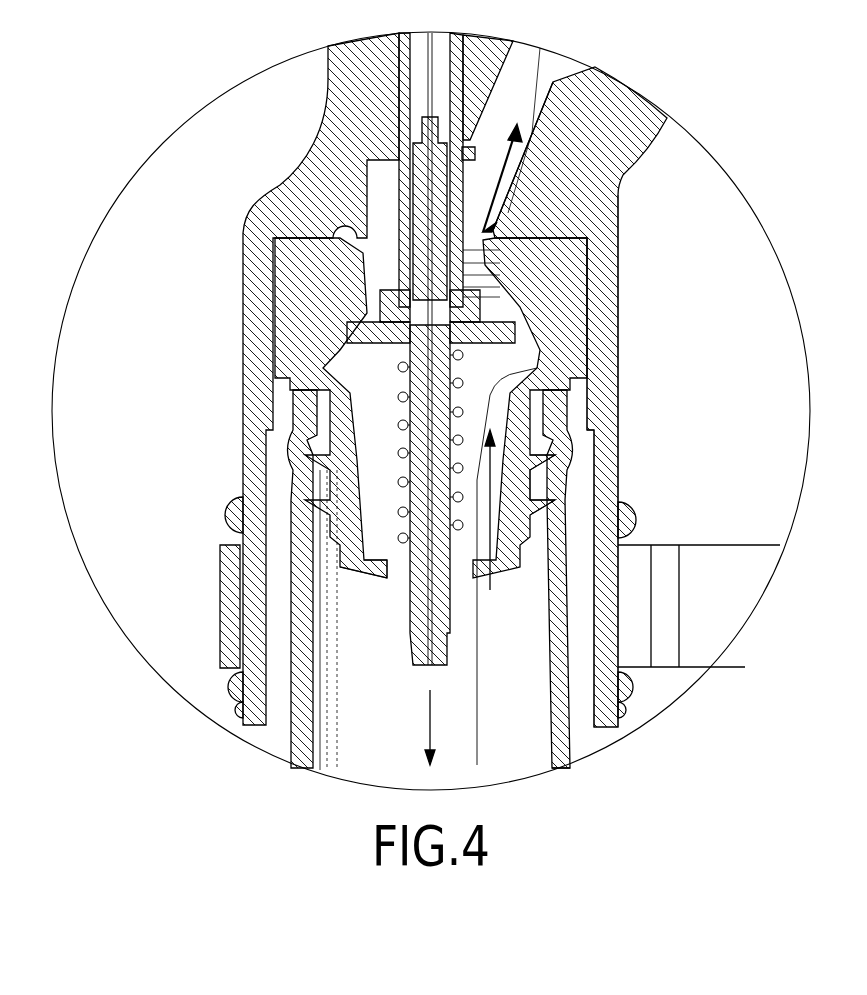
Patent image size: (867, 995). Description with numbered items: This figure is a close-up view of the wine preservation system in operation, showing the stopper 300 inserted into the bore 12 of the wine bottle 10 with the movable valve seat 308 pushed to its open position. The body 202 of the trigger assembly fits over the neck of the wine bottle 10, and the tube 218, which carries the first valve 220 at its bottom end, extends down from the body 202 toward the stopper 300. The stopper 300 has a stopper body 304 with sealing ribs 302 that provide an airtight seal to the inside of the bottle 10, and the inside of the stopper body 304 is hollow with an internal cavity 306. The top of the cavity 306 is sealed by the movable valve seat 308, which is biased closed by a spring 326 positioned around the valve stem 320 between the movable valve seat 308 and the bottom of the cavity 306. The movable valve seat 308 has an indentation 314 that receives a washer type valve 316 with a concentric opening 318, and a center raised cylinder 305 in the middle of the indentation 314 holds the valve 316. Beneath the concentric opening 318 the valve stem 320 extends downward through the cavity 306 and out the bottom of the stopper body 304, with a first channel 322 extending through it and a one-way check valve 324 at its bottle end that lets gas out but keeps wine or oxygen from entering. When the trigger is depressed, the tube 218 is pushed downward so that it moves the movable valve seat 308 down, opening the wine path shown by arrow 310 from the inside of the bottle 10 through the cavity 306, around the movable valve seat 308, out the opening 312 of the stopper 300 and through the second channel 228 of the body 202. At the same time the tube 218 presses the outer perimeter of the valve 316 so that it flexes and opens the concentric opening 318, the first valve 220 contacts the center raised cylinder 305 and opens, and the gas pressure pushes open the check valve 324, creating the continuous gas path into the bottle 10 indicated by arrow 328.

The wine bottle 10 is at (562, 742).
The bore 12 is at (522, 615).
The body 202 is at (348, 78).
The tube 218 is at (470, 60).
The first valve 220 is at (420, 222).
The second channel 228 is at (553, 82).
The stopper 300 is at (570, 258).
The sealing ribs 302 is at (585, 530).
The stopper body 304 is at (560, 285).
The center raised cylinder 305 is at (490, 278).
The internal cavity 306 is at (523, 352).
The movable valve seat 308 is at (497, 330).
The arrow 310 is at (553, 485).
The opening 312 is at (500, 231).
The indentation 314 is at (410, 330).
The valve 316 is at (400, 312).
The concentric opening 318 is at (437, 318).
The valve stem 320 is at (418, 432).
The first channel 322 is at (420, 500).
The check valve 324 is at (407, 680).
The spring 326 is at (403, 547).
The arrow 328 is at (430, 720).